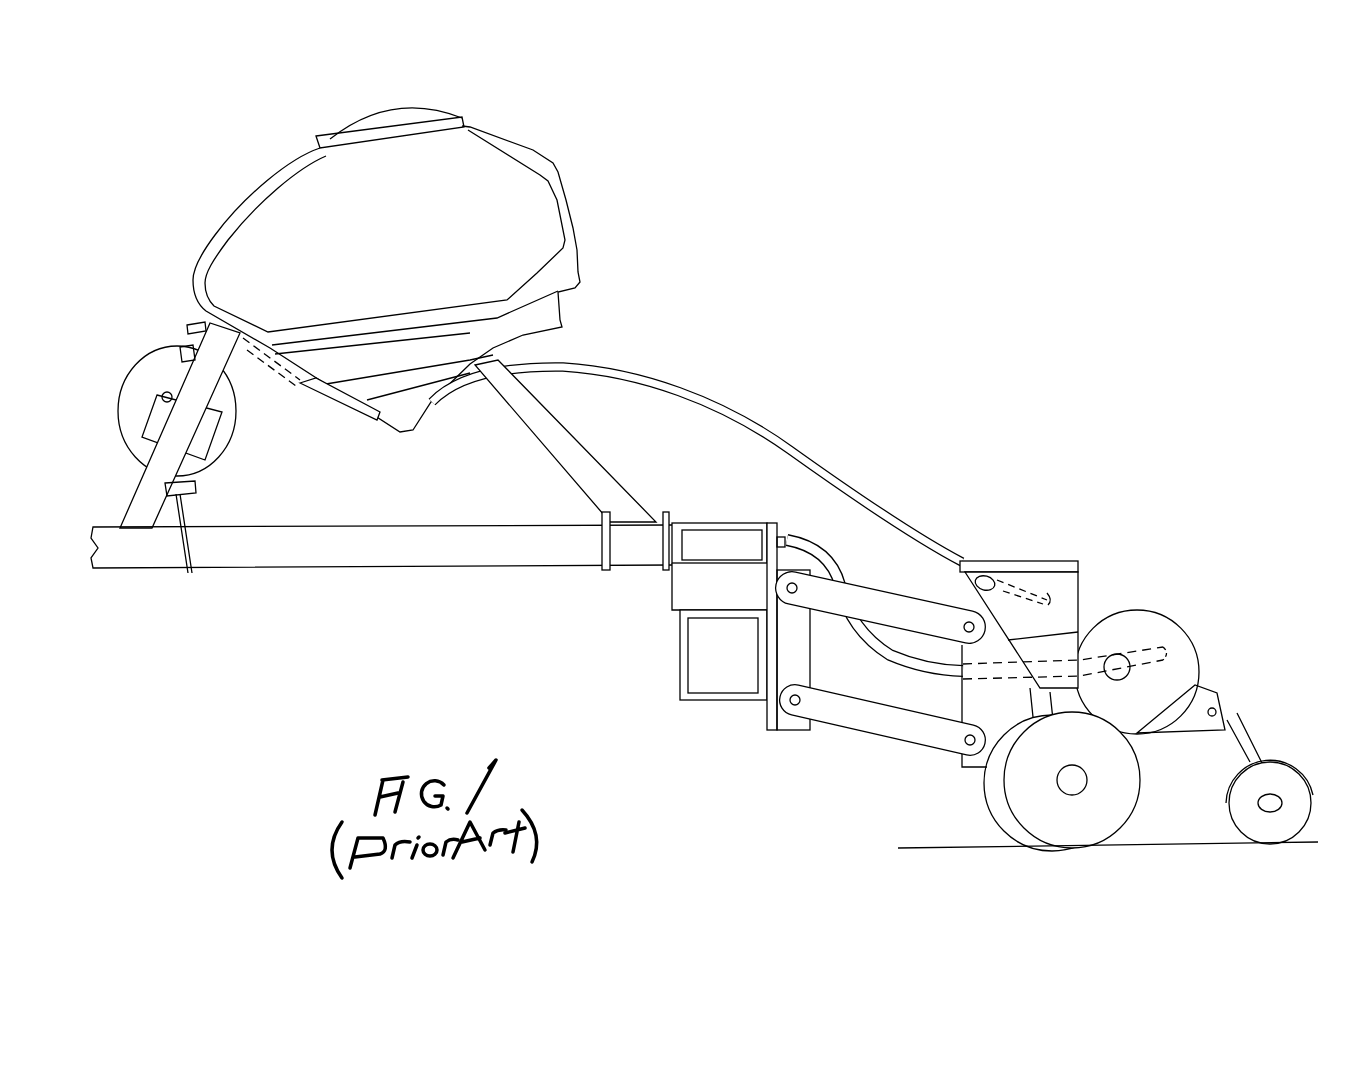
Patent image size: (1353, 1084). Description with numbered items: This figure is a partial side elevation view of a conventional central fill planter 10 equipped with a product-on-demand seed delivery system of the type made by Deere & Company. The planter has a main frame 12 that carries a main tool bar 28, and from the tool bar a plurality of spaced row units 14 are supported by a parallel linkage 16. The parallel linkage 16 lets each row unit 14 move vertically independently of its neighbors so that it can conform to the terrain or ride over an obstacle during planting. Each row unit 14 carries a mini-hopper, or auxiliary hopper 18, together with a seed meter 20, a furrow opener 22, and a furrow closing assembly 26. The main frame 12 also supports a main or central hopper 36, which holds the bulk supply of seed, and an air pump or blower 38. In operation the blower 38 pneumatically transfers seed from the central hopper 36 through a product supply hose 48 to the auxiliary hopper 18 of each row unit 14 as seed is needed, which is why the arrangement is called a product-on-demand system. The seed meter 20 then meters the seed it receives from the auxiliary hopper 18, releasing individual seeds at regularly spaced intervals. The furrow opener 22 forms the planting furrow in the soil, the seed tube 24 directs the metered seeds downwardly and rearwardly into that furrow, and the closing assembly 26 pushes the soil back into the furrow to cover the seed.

The central fill planter 10 is at (743, 265).
The main frame 12 is at (470, 557).
The row unit 14 is at (1108, 570).
The parallel linkage 16 is at (877, 743).
The auxiliary hopper 18 is at (1047, 577).
The seed meter 20 is at (1143, 613).
The furrow opener 22 is at (1017, 792).
The seed tube 24 is at (1015, 703).
The furrow closing assembly 26 is at (1272, 777).
The main tool bar 28 is at (678, 658).
The central hopper 36 is at (443, 249).
The blower 38 is at (145, 387).
The product supply hose 48 is at (693, 383).